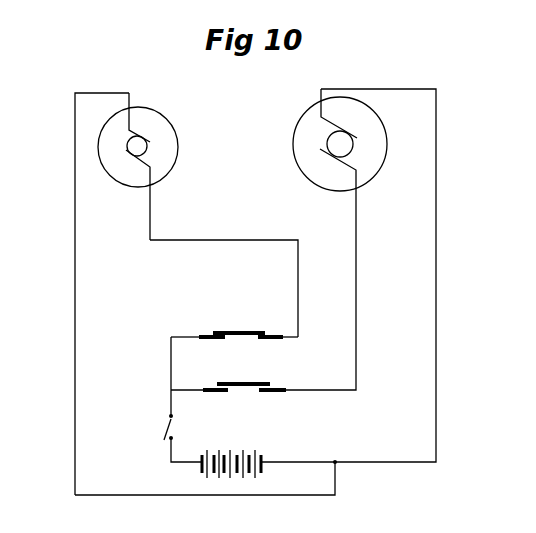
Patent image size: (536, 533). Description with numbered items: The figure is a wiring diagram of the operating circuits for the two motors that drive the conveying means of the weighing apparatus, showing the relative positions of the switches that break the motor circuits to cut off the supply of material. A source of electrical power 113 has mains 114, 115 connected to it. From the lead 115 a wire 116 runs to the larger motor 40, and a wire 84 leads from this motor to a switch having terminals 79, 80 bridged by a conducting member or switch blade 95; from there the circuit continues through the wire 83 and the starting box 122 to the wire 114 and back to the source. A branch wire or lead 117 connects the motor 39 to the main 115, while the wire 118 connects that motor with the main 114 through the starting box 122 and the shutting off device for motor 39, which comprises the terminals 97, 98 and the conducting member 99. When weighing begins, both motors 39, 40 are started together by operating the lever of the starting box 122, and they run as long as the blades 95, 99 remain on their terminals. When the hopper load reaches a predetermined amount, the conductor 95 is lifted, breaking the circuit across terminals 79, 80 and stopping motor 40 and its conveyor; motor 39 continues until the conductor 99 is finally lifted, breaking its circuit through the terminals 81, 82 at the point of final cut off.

The motor 39 is at (178, 141).
The larger motor 40 is at (292, 147).
The terminal 79 is at (222, 397).
The terminal 80 is at (277, 397).
The terminal 81 is at (216, 344).
The terminal 82 is at (273, 342).
The wire 83 is at (216, 383).
The wire 84 is at (357, 283).
The conducting member 95 is at (235, 384).
The terminal 97 is at (196, 318).
The terminal 98 is at (290, 342).
The conducting member 99 is at (265, 306).
The source of electrical power 113 is at (232, 452).
The main 114 is at (171, 462).
The main 115 is at (299, 462).
The wire 116 is at (436, 239).
The branch wire 117 is at (75, 290).
The wire 118 is at (224, 275).
The starting box 122 is at (165, 428).